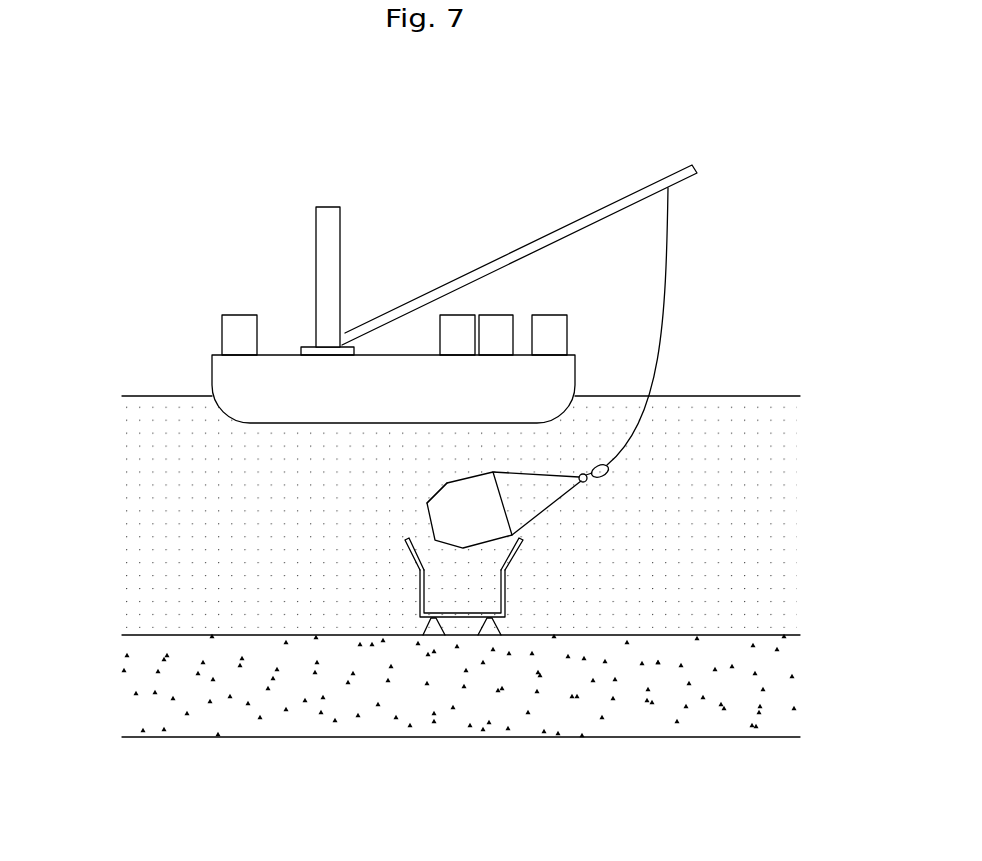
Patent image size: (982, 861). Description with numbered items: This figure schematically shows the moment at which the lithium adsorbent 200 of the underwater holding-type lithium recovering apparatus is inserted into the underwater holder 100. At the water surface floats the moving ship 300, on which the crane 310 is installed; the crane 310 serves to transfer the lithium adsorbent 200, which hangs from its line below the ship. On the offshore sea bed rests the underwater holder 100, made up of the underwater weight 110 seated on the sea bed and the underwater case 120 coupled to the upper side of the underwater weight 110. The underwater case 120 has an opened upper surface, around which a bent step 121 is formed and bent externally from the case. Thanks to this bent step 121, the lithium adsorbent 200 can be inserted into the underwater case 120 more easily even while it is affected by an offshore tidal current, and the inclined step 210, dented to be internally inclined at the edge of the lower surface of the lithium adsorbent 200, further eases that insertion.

The underwater holder 100 is at (425, 686).
The underwater weight 110 is at (433, 630).
The underwater case 120 is at (418, 598).
The bent step 121 is at (417, 575).
The lithium adsorbent 200 is at (465, 495).
The inclined step 210 is at (433, 494).
The moving ship 300 is at (432, 233).
The crane 310 is at (323, 232).